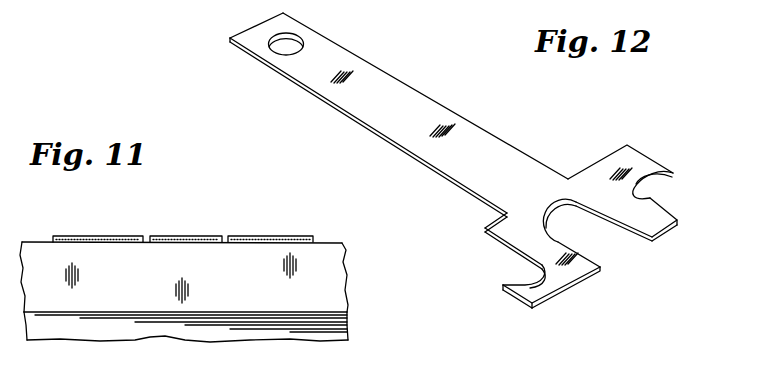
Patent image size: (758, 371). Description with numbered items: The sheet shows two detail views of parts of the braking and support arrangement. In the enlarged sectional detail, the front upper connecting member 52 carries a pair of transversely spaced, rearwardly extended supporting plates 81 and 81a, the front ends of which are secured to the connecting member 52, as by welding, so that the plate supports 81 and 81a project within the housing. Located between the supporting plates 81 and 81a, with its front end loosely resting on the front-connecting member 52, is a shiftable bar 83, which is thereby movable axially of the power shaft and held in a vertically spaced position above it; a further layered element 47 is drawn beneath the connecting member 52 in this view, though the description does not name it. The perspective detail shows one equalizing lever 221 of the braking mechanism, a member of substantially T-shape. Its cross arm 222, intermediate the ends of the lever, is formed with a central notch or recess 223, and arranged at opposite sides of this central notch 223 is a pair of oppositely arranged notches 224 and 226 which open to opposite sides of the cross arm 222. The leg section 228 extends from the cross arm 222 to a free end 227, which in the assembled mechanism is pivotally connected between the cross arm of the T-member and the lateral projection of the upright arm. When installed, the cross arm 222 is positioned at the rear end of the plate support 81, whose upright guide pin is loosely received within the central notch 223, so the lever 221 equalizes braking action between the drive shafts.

In FIG. 12, the equalizing lever 221 is at (480, 148).
In FIG. 12, the cross arm 222 is at (592, 180).
In FIG. 12, the central notch 223 is at (573, 227).
In FIG. 12, the notch 224 is at (532, 272).
In FIG. 12, the notch 226 is at (648, 187).
In FIG. 12, the free end 227 is at (252, 47).
In FIG. 12, the leg section 228 is at (363, 80).
In FIG. 11, the front upper connecting member 52 is at (315, 278).
In FIG. 11, the layer 47 is at (320, 332).
In FIG. 11, the supporting plate 81 is at (255, 242).
In FIG. 11, the supporting plate 81a is at (97, 237).
In FIG. 11, the shiftable bar 83 is at (190, 237).